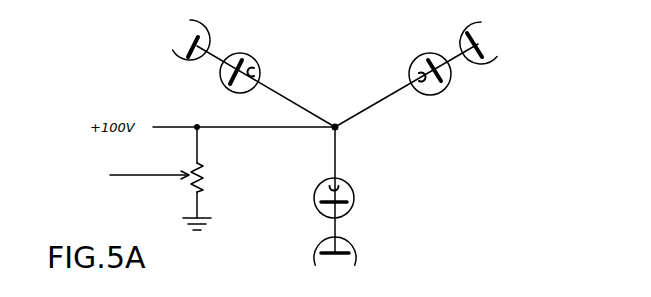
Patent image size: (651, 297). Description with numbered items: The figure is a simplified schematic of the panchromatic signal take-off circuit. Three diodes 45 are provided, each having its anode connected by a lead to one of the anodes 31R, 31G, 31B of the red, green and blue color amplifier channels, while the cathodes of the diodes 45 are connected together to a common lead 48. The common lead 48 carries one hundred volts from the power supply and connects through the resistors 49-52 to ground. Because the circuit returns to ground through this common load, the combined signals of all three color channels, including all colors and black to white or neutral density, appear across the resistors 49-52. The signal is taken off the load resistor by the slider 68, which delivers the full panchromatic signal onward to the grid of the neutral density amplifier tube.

The anode of red color amplifier channel 31R is at (187, 45).
The anode of green color amplifier channel 31G is at (485, 44).
The anode of blue color amplifier channel 31B is at (338, 258).
The diodes 45 is at (253, 55).
The common lead 48 is at (335, 118).
The resistors 49-52 is at (210, 177).
The slider 68 is at (152, 173).